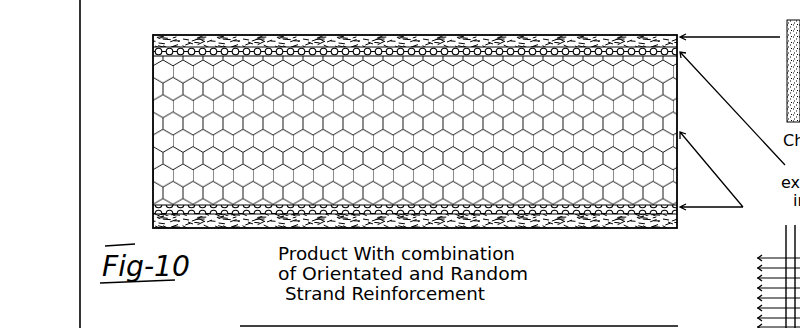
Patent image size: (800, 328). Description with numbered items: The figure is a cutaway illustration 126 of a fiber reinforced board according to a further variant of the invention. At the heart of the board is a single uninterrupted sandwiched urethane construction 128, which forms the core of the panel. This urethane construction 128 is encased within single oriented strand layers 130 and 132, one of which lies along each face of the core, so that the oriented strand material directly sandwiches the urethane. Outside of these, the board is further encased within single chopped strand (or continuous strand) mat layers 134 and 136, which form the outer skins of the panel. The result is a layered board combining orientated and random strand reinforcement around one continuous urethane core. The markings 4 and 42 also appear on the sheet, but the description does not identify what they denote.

The cutaway illustration 126 is at (95, 84).
The sandwiched urethane construction 128 is at (153, 165).
The oriented strand layer 130 is at (152, 56).
The oriented strand layer 132 is at (153, 212).
The chopped strand mat layer 134 is at (152, 42).
The chopped strand mat layer 136 is at (148, 228).
The annotation mark 4 is at (128, 132).
The annotation mark 42 is at (117, 316).